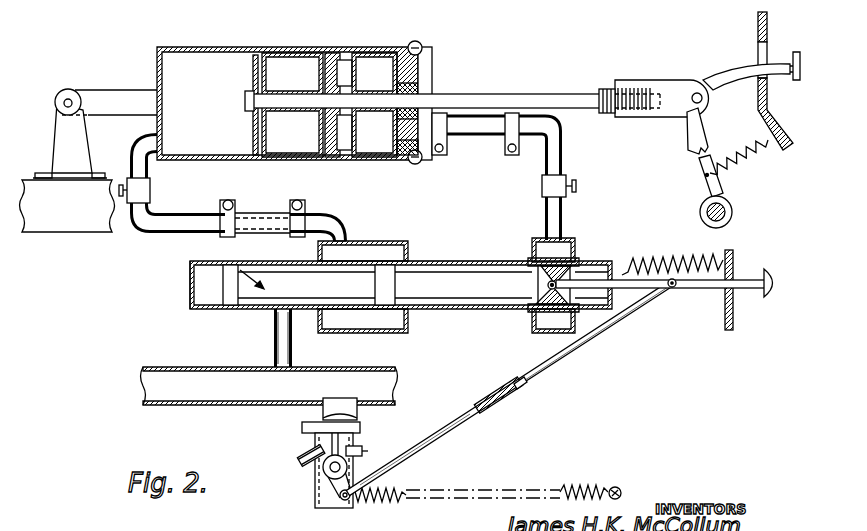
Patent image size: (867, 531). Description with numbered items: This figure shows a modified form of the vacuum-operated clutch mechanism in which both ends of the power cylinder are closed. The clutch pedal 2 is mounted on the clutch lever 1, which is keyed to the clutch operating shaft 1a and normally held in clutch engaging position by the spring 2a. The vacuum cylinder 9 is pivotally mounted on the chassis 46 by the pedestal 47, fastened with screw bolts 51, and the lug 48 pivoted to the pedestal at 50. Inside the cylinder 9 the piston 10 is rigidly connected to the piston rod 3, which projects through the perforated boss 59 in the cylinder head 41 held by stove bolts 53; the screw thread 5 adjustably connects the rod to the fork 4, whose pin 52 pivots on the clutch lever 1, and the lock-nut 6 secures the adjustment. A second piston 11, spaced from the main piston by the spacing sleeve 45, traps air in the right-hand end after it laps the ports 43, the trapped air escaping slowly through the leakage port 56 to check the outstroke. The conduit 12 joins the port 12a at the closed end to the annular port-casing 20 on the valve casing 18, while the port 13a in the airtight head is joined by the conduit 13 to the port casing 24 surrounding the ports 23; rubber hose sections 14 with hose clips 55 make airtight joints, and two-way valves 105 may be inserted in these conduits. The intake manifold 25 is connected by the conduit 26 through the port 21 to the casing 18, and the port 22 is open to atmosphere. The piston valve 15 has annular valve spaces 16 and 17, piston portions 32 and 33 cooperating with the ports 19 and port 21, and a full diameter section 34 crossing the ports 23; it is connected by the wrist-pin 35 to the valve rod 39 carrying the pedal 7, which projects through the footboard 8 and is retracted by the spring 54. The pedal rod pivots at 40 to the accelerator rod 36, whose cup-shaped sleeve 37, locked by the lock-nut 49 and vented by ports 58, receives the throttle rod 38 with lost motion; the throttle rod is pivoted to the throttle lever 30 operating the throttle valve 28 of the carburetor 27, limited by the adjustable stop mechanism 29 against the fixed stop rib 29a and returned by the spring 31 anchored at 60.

The clutch lever 1 is at (694, 138).
The clutch operating shaft 1a is at (733, 212).
The clutch pedal 2 is at (793, 55).
The spring 2a is at (740, 166).
The piston rod 3 is at (566, 93).
The fork 4 is at (640, 118).
The screw thread 5 is at (630, 92).
The lock-nut 6 is at (609, 88).
The pedal 7 is at (770, 276).
The footboard 8 is at (733, 316).
The vacuum cylinder 9 is at (219, 47).
The piston 10 is at (278, 73).
The second piston 11 is at (348, 73).
The conduit 12 is at (137, 220).
The port 12a is at (158, 145).
The conduit 13 is at (562, 155).
The port 13a is at (410, 128).
The rubber hose section 14 is at (267, 213).
The piston valve 15 is at (231, 263).
The annular valve space 16 is at (263, 268).
The annular valve space 17 is at (479, 261).
The valve casing 18 is at (200, 311).
The ports 19 is at (415, 258).
The annular port-casing 20 is at (405, 243).
The port 21 is at (292, 322).
The port 22 is at (446, 261).
The ports 23 is at (582, 257).
The annular port casing 24 is at (573, 245).
The intake manifold 25 is at (175, 367).
The conduit 26 is at (273, 336).
The carburetor 27 is at (320, 495).
The throttle valve 28 is at (325, 468).
The adjustable stop mechanism 29 is at (362, 445).
The fixed stop rib 29a is at (331, 445).
The throttle lever 30 is at (341, 500).
The spring 31 is at (380, 500).
The piston portion 32 is at (385, 262).
The piston portion 33 is at (224, 298).
The full diameter section 34 is at (548, 290).
The wrist-pin 35 is at (531, 330).
The accelerator rod 36 is at (539, 372).
The cup-shaped sleeve 37 is at (450, 436).
The throttle rod 38 is at (395, 462).
The valve rod 39 is at (706, 282).
The pivotal connection 40 is at (672, 289).
The cylinder head 41 is at (425, 61).
The ports 43 is at (337, 52).
The spacing sleeve 45 is at (297, 110).
The chassis 46 is at (68, 224).
The pedestal 47 is at (60, 128).
The lug 48 is at (100, 93).
The lock-nut 49 is at (516, 393).
The pivot 50 is at (66, 90).
The screw bolts 51 is at (43, 172).
The pin 52 is at (702, 98).
The stove bolts 53 is at (418, 44).
The spring 54 is at (660, 263).
The hose clips 55 is at (228, 200).
The leakage port 56 is at (392, 160).
The ports 58 is at (477, 404).
The perforated boss 59 is at (420, 83).
The anchor 60 is at (619, 487).
The two-way valves 105 is at (150, 190).